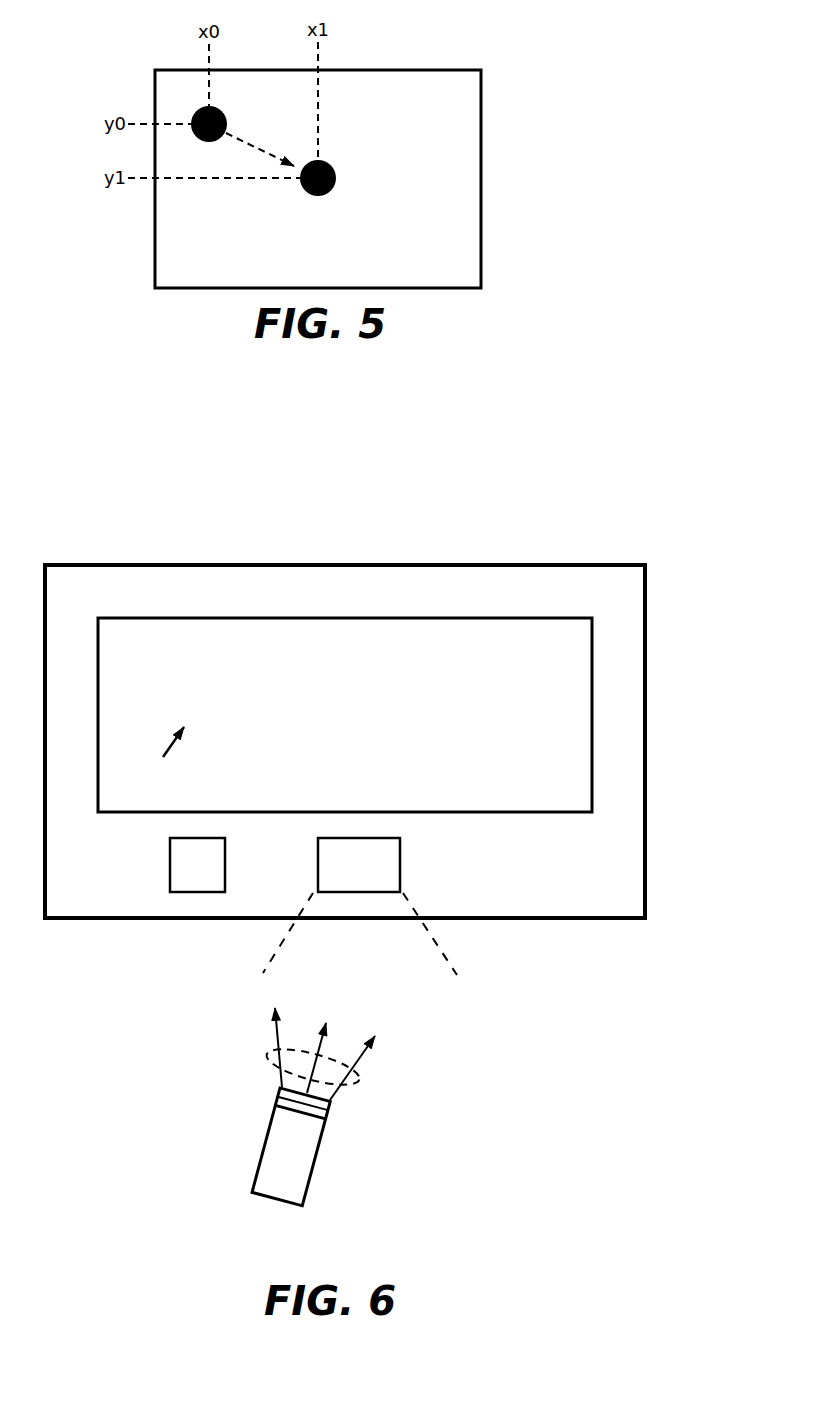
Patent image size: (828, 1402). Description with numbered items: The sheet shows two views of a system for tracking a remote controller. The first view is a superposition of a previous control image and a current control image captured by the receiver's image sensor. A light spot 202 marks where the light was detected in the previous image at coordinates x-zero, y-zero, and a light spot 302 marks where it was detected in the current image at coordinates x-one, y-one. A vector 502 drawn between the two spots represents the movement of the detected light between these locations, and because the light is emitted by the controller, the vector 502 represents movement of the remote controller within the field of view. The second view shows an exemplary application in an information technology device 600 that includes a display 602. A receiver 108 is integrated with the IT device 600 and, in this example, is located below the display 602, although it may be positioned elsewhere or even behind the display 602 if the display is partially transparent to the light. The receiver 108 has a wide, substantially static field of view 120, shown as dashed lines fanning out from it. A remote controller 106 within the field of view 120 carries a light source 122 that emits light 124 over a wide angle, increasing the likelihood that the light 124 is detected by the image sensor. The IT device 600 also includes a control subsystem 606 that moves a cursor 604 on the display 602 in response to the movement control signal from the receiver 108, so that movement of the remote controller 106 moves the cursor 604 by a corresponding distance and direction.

In FIG. 5, the light spot 202 is at (182, 106).
In FIG. 5, the light spot 302 is at (346, 172).
In FIG. 5, the vector 502 is at (252, 146).
In FIG. 6, the information technology device 600 is at (674, 531).
In FIG. 6, the display 602 is at (345, 715).
In FIG. 6, the cursor 604 is at (172, 749).
In FIG. 6, the control subsystem 606 is at (197, 865).
In FIG. 6, the receiver 108 is at (359, 865).
In FIG. 6, the field of view 120 is at (462, 959).
In FIG. 6, the remote controller 106 is at (342, 1157).
In FIG. 6, the light source 122 is at (331, 1108).
In FIG. 6, the light 124 is at (363, 1083).